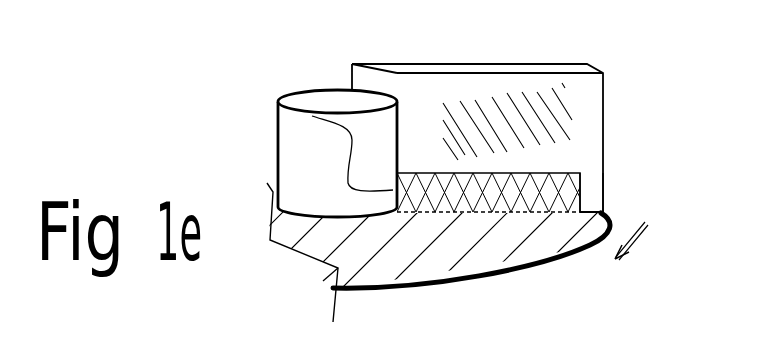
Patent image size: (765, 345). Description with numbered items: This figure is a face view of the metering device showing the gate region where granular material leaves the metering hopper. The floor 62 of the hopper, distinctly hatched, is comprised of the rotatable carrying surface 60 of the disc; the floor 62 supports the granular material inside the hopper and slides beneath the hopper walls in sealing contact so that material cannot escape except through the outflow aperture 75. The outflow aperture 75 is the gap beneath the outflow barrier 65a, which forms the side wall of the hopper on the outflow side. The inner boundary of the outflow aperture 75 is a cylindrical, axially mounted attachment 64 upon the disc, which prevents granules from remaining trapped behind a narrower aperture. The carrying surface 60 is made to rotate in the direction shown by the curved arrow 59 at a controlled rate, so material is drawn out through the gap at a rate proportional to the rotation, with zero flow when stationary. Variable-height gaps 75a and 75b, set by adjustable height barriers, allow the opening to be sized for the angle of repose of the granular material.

The curved arrow 59 is at (648, 236).
The carrying surface 60 is at (421, 266).
The floor 62 is at (580, 197).
The cylindrical axially mounted attachment 64 is at (275, 128).
The outflow barrier 65a is at (471, 97).
The outflow aperture 75 is at (497, 202).
The variable-height gap 75a is at (586, 173).
The variable-height gap 75b is at (312, 116).